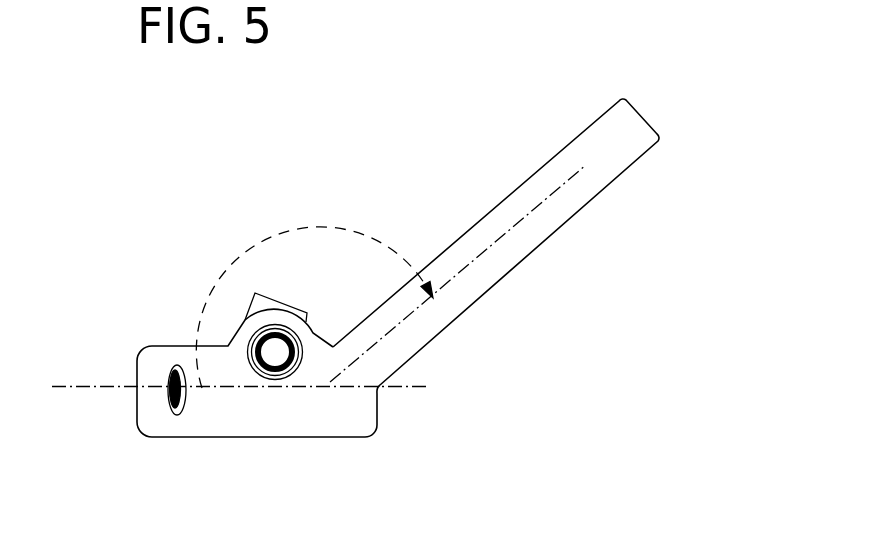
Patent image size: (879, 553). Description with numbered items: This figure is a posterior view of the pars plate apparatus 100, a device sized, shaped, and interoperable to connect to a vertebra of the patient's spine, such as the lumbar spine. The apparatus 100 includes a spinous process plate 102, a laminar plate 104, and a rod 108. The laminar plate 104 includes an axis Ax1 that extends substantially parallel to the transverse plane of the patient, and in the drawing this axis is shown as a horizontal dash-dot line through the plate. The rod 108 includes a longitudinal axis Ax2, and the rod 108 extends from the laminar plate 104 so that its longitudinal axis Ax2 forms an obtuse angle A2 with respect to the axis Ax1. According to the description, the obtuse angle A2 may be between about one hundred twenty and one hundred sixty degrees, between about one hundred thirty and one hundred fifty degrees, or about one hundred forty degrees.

The pars plate apparatus 100 is at (228, 100).
The spinous process plate 102 is at (150, 372).
The laminar plate 104 is at (253, 417).
The rod 108 is at (622, 117).
The obtuse angle A2 is at (314, 297).
The axis Ax1 is at (405, 393).
The longitudinal axis Ax2 is at (470, 275).